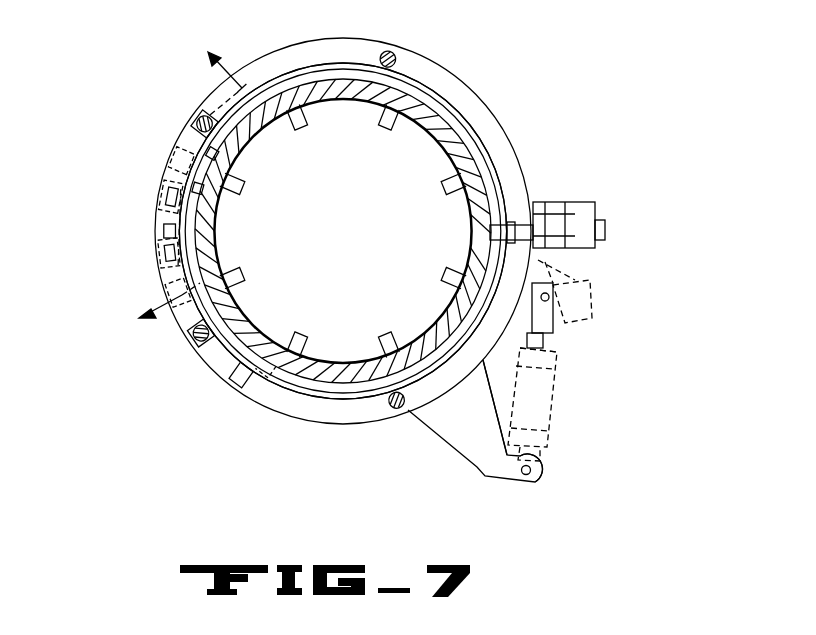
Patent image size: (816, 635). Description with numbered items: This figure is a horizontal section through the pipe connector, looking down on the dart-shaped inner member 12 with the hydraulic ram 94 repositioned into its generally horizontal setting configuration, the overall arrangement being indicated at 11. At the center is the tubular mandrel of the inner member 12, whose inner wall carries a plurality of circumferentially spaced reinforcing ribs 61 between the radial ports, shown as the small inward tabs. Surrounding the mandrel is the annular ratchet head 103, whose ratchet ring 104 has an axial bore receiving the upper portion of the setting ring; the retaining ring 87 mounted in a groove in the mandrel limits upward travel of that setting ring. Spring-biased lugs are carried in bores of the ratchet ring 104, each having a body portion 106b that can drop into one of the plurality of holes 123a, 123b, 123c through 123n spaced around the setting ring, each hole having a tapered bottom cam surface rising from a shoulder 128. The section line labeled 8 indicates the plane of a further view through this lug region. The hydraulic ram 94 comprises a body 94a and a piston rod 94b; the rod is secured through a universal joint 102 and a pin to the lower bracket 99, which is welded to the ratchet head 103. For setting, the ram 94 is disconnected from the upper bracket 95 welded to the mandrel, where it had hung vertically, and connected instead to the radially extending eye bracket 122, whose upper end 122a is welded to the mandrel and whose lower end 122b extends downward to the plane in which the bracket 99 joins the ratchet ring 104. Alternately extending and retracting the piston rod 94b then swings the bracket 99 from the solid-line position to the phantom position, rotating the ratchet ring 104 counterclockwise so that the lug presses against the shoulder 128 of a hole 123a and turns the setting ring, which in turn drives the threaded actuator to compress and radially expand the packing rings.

The section line 8- 8 is at (178, 182).
The clamping ring assembly 11 is at (472, 76).
The inner member 12 is at (507, 124).
The reinforcing ribs 61 is at (380, 127).
The retaining ring 87 is at (480, 182).
The hydraulic ram 94 is at (575, 210).
The body of the hydraulic ram 94a is at (557, 366).
The piston rod 94b is at (548, 340).
The upper bracket 95 is at (490, 232).
The lower bracket 99 is at (598, 216).
The universal joint 102 is at (570, 274).
The ratchet head 103 is at (148, 196).
The ratchet ring 104 is at (295, 37).
The body portion of the lug 106b is at (198, 123).
The eye bracket 122 is at (455, 458).
The upper end of the bracket 122a is at (430, 415).
The lower end of the bracket 122b is at (515, 478).
The hole 123a is at (178, 150).
The hole 123b is at (170, 180).
The hole 123c is at (160, 250).
The hole 123n is at (165, 288).
The shoulder 128 is at (160, 232).